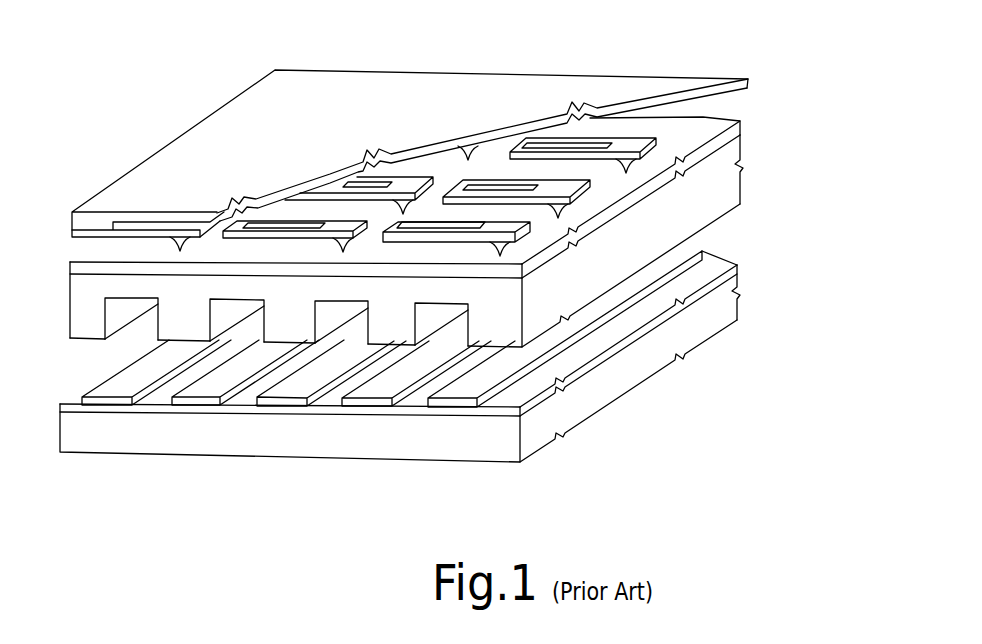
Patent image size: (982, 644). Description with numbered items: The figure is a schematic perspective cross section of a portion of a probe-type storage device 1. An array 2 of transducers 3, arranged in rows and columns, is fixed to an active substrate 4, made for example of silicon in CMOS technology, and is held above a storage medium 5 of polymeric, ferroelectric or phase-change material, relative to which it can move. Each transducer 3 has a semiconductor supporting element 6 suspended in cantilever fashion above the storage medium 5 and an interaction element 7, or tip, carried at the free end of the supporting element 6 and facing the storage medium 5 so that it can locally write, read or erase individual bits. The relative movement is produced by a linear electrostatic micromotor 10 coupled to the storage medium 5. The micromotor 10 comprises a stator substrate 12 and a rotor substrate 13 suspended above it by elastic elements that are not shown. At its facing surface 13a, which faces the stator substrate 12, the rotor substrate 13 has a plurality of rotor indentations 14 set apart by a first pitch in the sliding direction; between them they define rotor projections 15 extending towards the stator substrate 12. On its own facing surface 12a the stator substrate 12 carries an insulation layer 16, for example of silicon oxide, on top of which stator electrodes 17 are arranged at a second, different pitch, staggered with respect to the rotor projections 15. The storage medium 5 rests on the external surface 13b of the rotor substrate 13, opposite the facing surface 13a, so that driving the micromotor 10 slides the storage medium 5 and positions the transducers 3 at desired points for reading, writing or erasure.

The storage device 1 is at (452, 268).
The array 2 is at (690, 130).
The transducer 3 is at (607, 170).
The active substrate 4 is at (695, 82).
The storage medium 5 is at (692, 156).
The supporting element 6 is at (612, 143).
The interaction element 7 is at (621, 157).
The micromotor 10 is at (758, 227).
The stator substrate 12 is at (735, 307).
The facing surface 12a is at (66, 402).
The rotor substrate 13 is at (734, 197).
The facing surface 13a is at (76, 345).
The external surface 13b is at (78, 264).
The rotor indentations 14 is at (214, 332).
The rotor projections 15 is at (173, 320).
The insulation layer 16 is at (737, 268).
The stator electrodes 17 is at (437, 404).